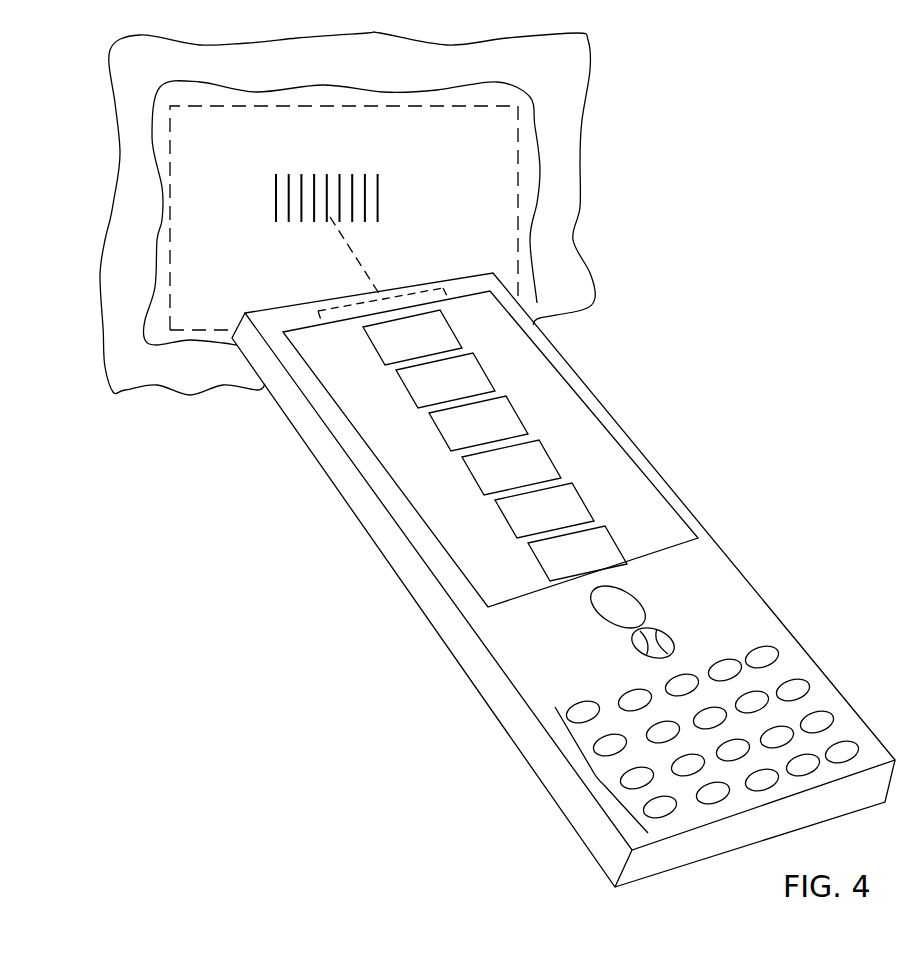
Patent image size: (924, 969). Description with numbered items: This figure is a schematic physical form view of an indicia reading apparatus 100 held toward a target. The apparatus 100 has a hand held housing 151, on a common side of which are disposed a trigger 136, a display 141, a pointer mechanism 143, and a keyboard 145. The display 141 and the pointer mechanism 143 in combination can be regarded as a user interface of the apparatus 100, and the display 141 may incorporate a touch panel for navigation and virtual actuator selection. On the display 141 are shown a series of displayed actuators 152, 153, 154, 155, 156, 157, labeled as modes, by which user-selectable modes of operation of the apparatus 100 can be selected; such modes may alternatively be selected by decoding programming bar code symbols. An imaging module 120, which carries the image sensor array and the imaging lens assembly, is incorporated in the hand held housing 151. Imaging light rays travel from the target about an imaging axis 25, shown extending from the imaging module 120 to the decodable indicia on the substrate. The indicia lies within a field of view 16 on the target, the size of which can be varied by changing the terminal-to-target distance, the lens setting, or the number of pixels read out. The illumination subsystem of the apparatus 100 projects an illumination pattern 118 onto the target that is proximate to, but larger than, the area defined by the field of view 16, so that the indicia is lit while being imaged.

The indicia reading apparatus 100 is at (693, 302).
The illumination pattern 118 is at (533, 128).
The field of view 16 is at (520, 205).
The imaging axis 25 is at (353, 253).
The imaging module 120 is at (500, 283).
The display 141 is at (700, 535).
The displayed actuator 152 is at (458, 338).
The displayed actuator 153 is at (487, 377).
The displayed actuator 154 is at (517, 415).
The displayed actuator 155 is at (551, 455).
The displayed actuator 156 is at (582, 500).
The displayed actuator 157 is at (605, 532).
The trigger 136 is at (645, 603).
The pointer mechanism 143 is at (675, 638).
The hand held housing 151 is at (802, 667).
The keyboard 145 is at (595, 775).